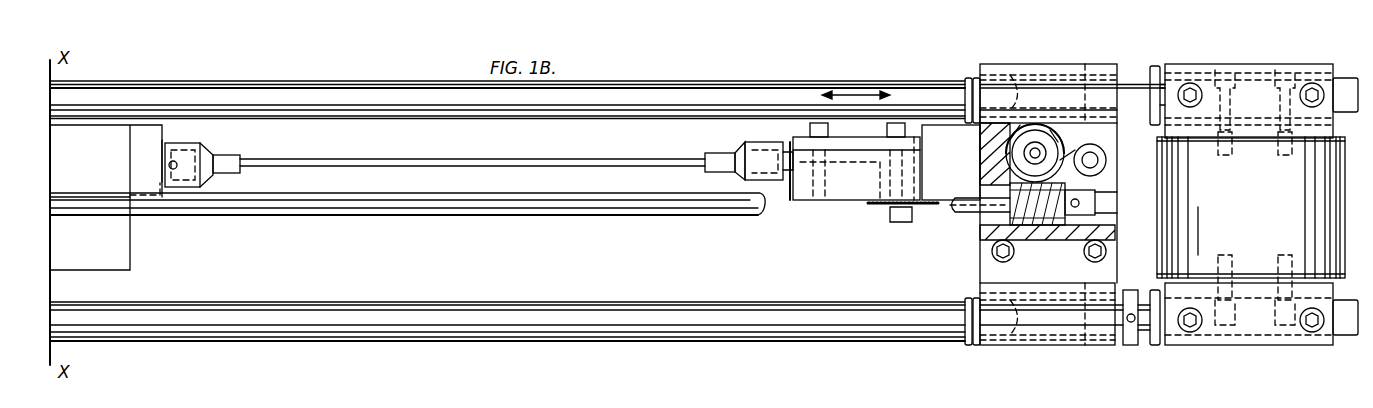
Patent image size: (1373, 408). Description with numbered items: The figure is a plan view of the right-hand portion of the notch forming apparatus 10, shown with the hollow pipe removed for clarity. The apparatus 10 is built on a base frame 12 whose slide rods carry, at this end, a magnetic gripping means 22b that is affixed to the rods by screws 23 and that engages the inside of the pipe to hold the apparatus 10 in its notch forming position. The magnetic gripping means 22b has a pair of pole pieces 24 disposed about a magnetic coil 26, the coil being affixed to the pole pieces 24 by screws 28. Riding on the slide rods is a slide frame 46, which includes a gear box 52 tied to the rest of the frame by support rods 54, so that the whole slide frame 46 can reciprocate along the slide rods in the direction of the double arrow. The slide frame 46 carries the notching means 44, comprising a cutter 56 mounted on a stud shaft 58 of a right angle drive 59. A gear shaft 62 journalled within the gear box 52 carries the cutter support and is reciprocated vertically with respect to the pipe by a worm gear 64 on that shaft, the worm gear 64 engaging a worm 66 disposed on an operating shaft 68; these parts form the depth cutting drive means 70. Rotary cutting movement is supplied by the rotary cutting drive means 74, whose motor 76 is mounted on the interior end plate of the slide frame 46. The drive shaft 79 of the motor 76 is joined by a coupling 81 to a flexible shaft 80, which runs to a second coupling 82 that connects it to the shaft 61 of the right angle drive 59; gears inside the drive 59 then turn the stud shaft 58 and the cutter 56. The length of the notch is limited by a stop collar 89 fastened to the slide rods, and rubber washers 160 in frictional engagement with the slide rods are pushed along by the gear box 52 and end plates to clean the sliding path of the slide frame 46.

The notch forming apparatus 10 is at (924, 347).
The base frame 12 is at (410, 343).
The magnetic gripping means 22b is at (1192, 346).
The screws 23 is at (1302, 83).
The pole pieces 24 is at (1304, 66).
The magnetic coil 26 is at (1265, 210).
The screws 28 is at (1272, 146).
The notching means 44 is at (837, 211).
The slide frame 46 is at (820, 343).
The gear box 52 is at (980, 270).
The support rods 54 is at (485, 120).
The cutter 56 is at (872, 205).
The stud shaft 58 is at (897, 223).
The right angle drive 59 is at (822, 200).
The shaft 61 is at (790, 175).
The gear shaft 62 is at (1042, 152).
The worm gear 64 is at (1095, 186).
The worm 66 is at (980, 233).
The operating shaft 68 is at (665, 218).
The depth cutting drive means 70 is at (531, 222).
The rotary cutting drive means 74 is at (98, 170).
The motor 76 is at (108, 138).
The drive shaft 79 is at (204, 144).
The flexible shaft 80 is at (549, 157).
The coupling 81 is at (216, 176).
The coupling 82 is at (745, 150).
The stop collar 89 is at (1131, 350).
The rubber washers 160 is at (966, 72).